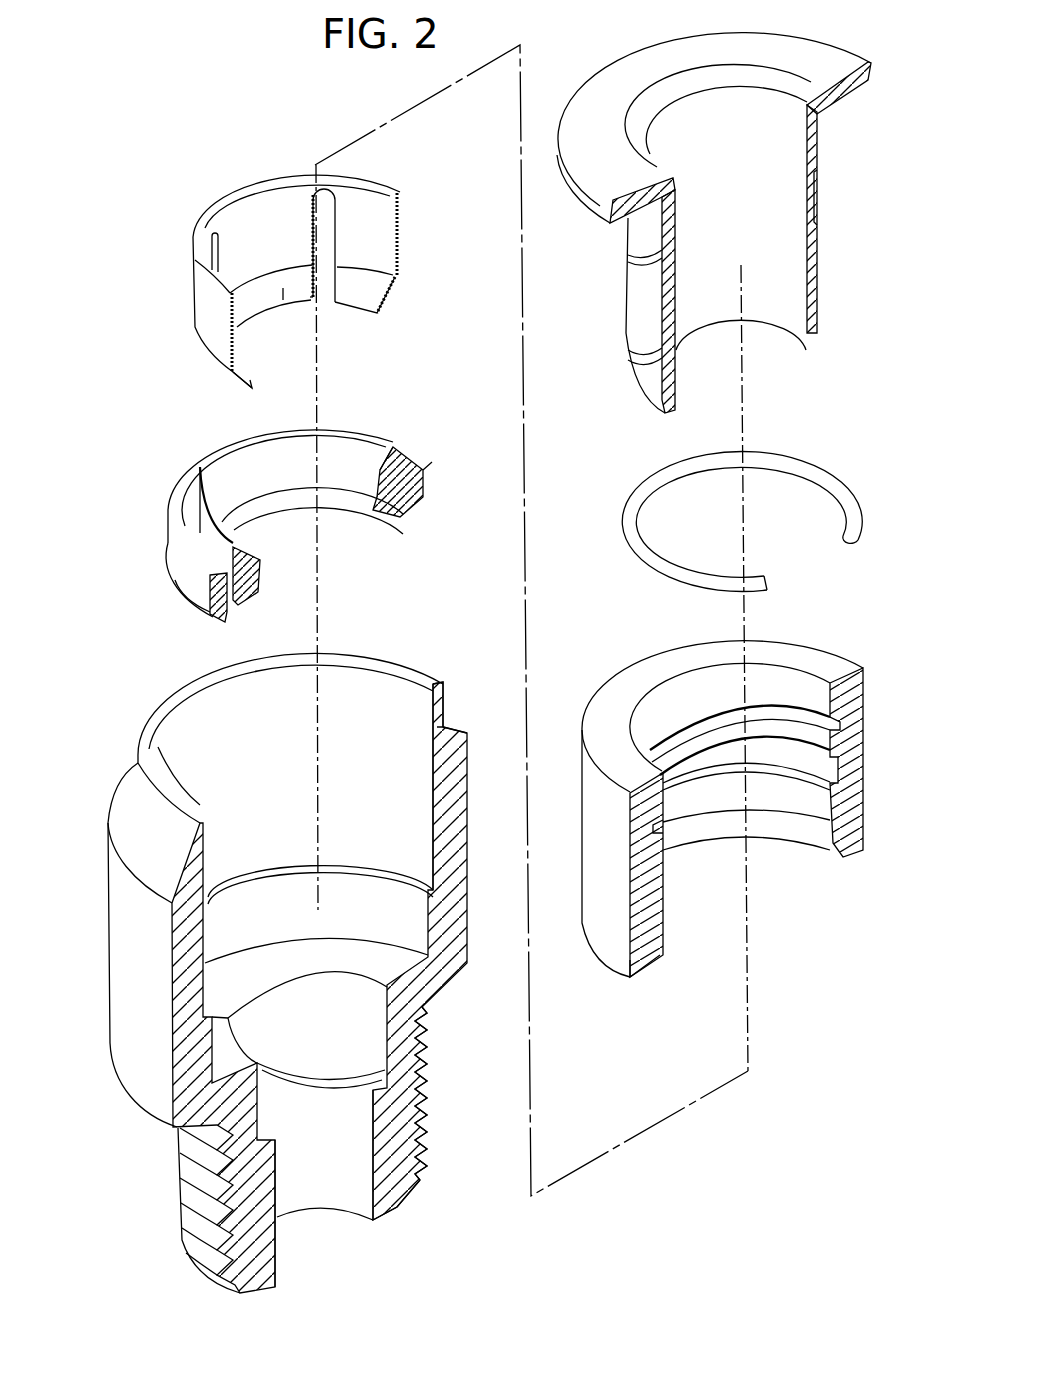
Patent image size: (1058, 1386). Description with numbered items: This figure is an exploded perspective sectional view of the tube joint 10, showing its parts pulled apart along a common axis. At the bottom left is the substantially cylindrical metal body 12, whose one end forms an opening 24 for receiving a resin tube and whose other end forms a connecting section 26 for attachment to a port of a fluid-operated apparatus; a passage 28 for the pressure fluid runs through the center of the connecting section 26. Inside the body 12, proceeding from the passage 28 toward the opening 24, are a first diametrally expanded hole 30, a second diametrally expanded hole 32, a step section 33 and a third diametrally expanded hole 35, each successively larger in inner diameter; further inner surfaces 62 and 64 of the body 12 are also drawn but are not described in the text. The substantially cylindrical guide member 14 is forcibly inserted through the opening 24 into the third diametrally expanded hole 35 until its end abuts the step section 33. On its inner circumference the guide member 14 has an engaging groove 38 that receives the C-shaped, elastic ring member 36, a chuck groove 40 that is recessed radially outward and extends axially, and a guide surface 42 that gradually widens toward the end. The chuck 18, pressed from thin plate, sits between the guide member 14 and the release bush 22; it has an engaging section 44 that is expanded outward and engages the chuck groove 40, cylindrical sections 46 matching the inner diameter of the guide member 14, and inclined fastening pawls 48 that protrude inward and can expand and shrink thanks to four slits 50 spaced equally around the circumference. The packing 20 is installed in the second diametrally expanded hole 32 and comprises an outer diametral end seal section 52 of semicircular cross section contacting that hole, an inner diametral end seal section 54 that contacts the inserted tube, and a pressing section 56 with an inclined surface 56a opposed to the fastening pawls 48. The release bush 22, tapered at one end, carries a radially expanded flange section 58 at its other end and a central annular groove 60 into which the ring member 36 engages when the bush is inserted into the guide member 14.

The tube joint 10 is at (228, 77).
The body 12 is at (133, 1112).
The guide member 14 is at (834, 655).
The chuck 18 is at (404, 182).
The packing 20 is at (390, 428).
The release bush 22 is at (834, 42).
The opening 24 is at (393, 703).
The connecting section 26 is at (405, 1180).
The passage 28 is at (353, 1173).
The first diametrally expanded hole 30 is at (373, 1047).
The second diametrally expanded hole 32 is at (410, 908).
The step section 33 is at (407, 878).
The third diametrally expanded hole 35 is at (410, 748).
The ring member 36 is at (840, 487).
The engaging groove 38 is at (635, 812).
The chuck groove 40 is at (640, 862).
The guide surface 42 is at (662, 950).
The engaging section 44 is at (401, 203).
The cylindrical sections 46 is at (400, 252).
The fastening pawls 48 is at (385, 302).
The slits 50 is at (214, 235).
The outer diametral end seal section 52 is at (420, 490).
The inner diametral end seal section 54 is at (377, 508).
The pressing section 56 is at (405, 463).
The inclined surface 56a is at (255, 553).
The flange section 58 is at (605, 75).
The annular groove 60 is at (820, 200).
The bore 62 is at (278, 1083).
The chamfer 64 is at (393, 963).